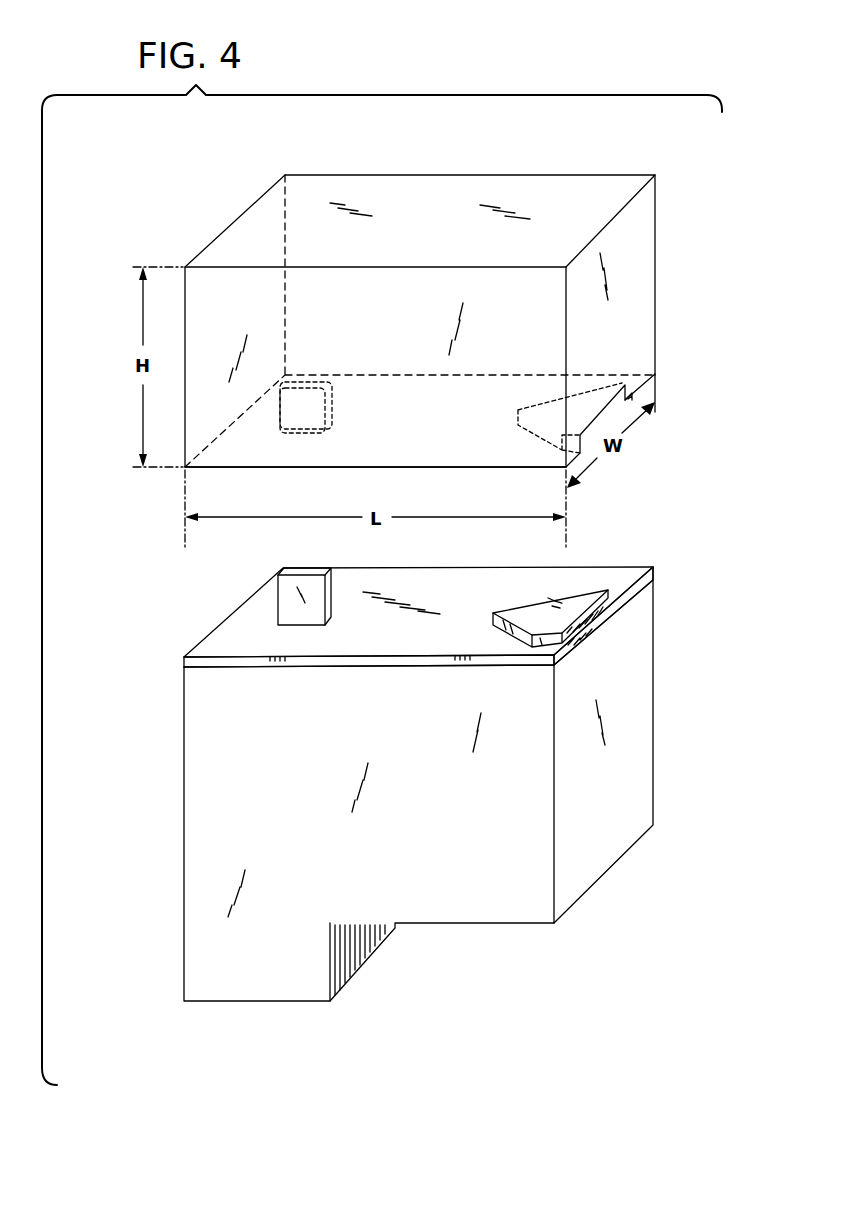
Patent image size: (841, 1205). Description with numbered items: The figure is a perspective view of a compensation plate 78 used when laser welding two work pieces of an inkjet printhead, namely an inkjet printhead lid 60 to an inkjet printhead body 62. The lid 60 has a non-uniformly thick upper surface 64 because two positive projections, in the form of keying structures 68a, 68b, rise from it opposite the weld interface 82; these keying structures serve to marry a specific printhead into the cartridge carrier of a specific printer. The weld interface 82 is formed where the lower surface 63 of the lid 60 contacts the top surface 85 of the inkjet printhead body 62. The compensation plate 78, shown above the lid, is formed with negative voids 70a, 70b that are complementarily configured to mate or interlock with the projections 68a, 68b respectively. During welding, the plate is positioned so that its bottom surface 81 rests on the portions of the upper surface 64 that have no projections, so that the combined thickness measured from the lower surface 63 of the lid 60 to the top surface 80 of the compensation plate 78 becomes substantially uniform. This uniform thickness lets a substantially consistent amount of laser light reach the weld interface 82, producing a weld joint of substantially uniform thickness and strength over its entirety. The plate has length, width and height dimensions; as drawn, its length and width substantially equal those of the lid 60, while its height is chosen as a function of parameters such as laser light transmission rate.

The inkjet printhead lid 60 is at (655, 567).
The inkjet printhead body 62 is at (632, 681).
The lower surface of the lid 63 is at (313, 667).
The upper surface of the lid 64 is at (433, 590).
The first keying structure 68a is at (278, 590).
The second keying structure 68b is at (565, 600).
The first negative void 70a is at (332, 408).
The second negative void 70b is at (626, 393).
The compensation plate 78 is at (645, 232).
The top surface of the compensation plate 80 is at (240, 232).
The bottom surface of the compensation plate 81 is at (431, 469).
The weld interface 82 is at (650, 586).
The top surface of the inkjet printhead body 85 is at (333, 665).